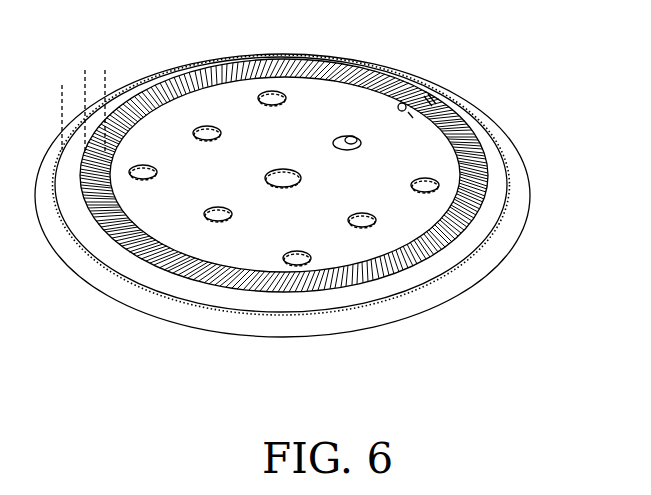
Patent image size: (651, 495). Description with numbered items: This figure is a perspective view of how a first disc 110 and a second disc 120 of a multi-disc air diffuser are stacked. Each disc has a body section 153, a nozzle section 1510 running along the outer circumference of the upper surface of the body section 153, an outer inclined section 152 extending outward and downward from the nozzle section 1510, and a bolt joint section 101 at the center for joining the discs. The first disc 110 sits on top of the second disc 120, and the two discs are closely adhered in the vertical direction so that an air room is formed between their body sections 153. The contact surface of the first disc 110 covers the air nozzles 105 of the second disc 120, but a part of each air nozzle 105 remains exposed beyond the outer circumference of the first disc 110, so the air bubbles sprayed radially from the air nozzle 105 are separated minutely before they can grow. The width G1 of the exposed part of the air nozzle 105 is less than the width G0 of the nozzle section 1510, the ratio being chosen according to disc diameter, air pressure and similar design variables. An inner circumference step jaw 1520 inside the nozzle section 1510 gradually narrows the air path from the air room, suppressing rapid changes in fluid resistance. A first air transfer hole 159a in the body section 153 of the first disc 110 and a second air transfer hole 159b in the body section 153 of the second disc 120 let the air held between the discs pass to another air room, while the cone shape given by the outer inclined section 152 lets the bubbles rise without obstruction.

The bolt joint section 101 is at (276, 172).
The air nozzle 105 is at (472, 139).
The first disc 110 is at (500, 173).
The second disc 120 is at (529, 198).
The outer inclined section 152 is at (527, 221).
The body section 153 is at (430, 98).
The nozzle section 1510 is at (471, 126).
The inner circumference step jaw 1520 is at (402, 102).
The first air transfer hole 159a is at (353, 137).
The second air transfer hole 159b is at (340, 139).
The width of the nozzle section G0 is at (106, 75).
The width of the exposed part of the air nozzle G1 is at (66, 103).